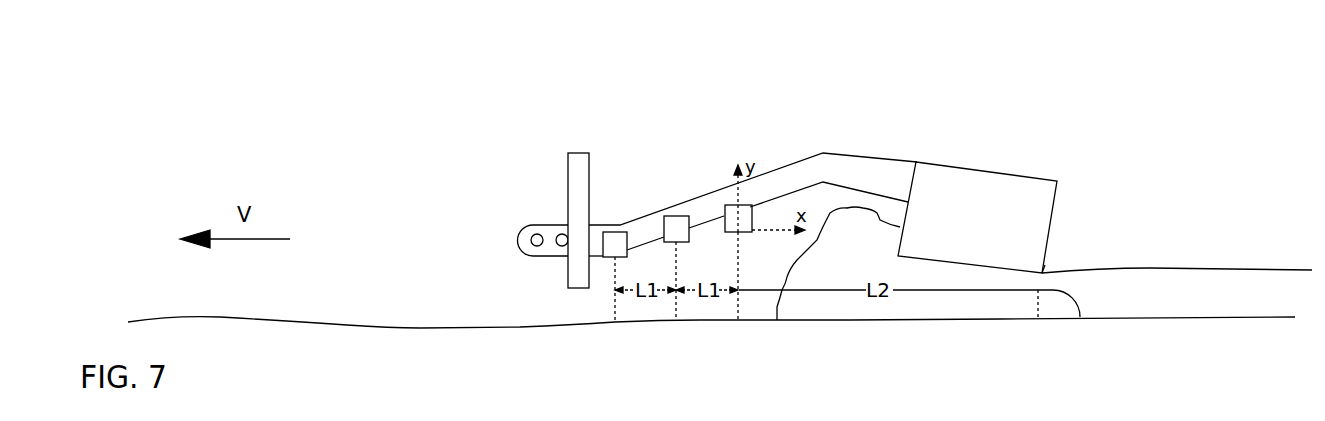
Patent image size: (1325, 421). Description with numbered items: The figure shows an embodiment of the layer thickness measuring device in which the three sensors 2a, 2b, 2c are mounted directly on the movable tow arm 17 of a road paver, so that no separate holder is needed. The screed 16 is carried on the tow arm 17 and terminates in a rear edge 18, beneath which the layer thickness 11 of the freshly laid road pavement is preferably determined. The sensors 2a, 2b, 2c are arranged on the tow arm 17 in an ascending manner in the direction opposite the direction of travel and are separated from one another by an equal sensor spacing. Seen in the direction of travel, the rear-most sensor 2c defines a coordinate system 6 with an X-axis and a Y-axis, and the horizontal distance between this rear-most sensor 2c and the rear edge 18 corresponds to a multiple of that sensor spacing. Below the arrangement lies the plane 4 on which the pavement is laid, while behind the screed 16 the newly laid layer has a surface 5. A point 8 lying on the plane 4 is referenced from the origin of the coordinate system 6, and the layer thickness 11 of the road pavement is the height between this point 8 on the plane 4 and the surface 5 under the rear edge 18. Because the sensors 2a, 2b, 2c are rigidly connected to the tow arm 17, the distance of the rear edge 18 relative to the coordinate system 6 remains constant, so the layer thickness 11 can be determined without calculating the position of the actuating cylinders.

The sensor 2a is at (610, 232).
The sensor 2b is at (672, 216).
The rear-most sensor 2c is at (727, 205).
The plane 4 is at (347, 322).
The surface 5 is at (1180, 268).
The coordinate system 6 is at (752, 205).
The point 8 is at (1038, 318).
The layer thickness 11 is at (1078, 312).
The screed 16 is at (1040, 180).
The tow arm 17 is at (518, 240).
The rear edge 18 is at (1045, 265).